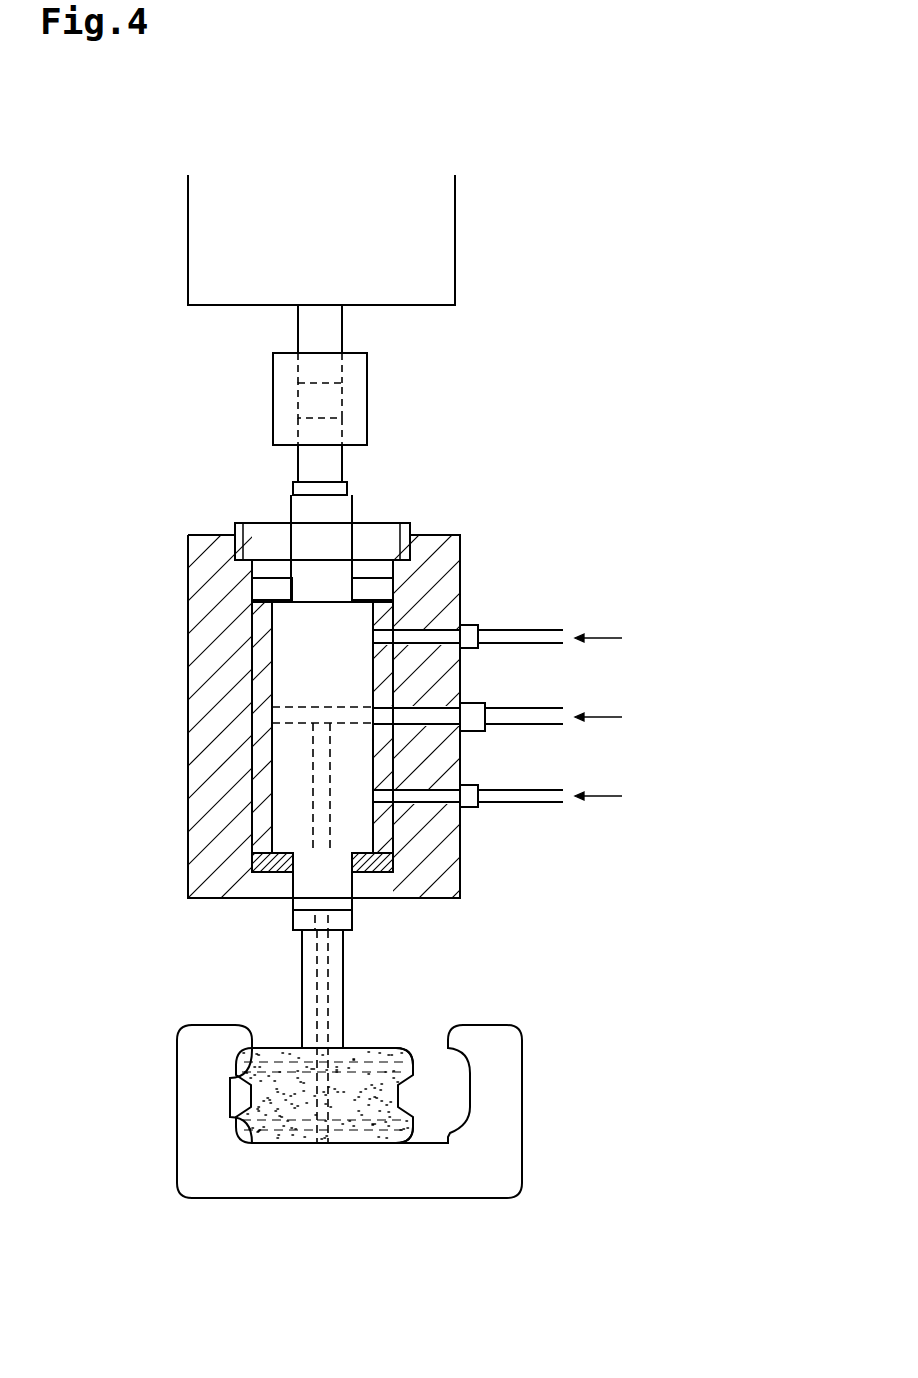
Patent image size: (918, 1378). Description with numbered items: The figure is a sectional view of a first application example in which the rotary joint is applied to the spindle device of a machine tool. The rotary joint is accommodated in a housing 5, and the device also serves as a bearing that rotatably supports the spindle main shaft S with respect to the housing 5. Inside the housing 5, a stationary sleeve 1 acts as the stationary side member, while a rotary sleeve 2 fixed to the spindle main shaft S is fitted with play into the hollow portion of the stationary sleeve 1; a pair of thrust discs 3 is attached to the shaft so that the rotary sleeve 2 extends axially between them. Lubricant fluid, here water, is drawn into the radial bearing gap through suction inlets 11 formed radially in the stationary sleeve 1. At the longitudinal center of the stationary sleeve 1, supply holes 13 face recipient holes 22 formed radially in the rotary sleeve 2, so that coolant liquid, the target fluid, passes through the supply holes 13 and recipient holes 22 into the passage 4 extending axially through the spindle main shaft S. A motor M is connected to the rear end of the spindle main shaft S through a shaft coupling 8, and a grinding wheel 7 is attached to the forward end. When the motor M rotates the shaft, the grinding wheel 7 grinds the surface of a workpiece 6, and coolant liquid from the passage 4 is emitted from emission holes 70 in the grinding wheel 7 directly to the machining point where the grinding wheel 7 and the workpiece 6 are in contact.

The motor M is at (455, 237).
The shaft coupling 8 is at (367, 402).
The stationary sleeve 1 is at (262, 692).
The housing 5 is at (461, 552).
The thrust discs 3 is at (270, 583).
The rotary sleeve 2 is at (297, 650).
The recipient holes 22 is at (300, 715).
The passage 4 is at (318, 775).
The suction inlets 11 is at (425, 636).
The supply holes 13 is at (427, 717).
The spindle main shaft S is at (343, 955).
The grinding wheel 7 is at (377, 1047).
The emission holes 70 is at (412, 1070).
The workpiece 6 is at (522, 1123).